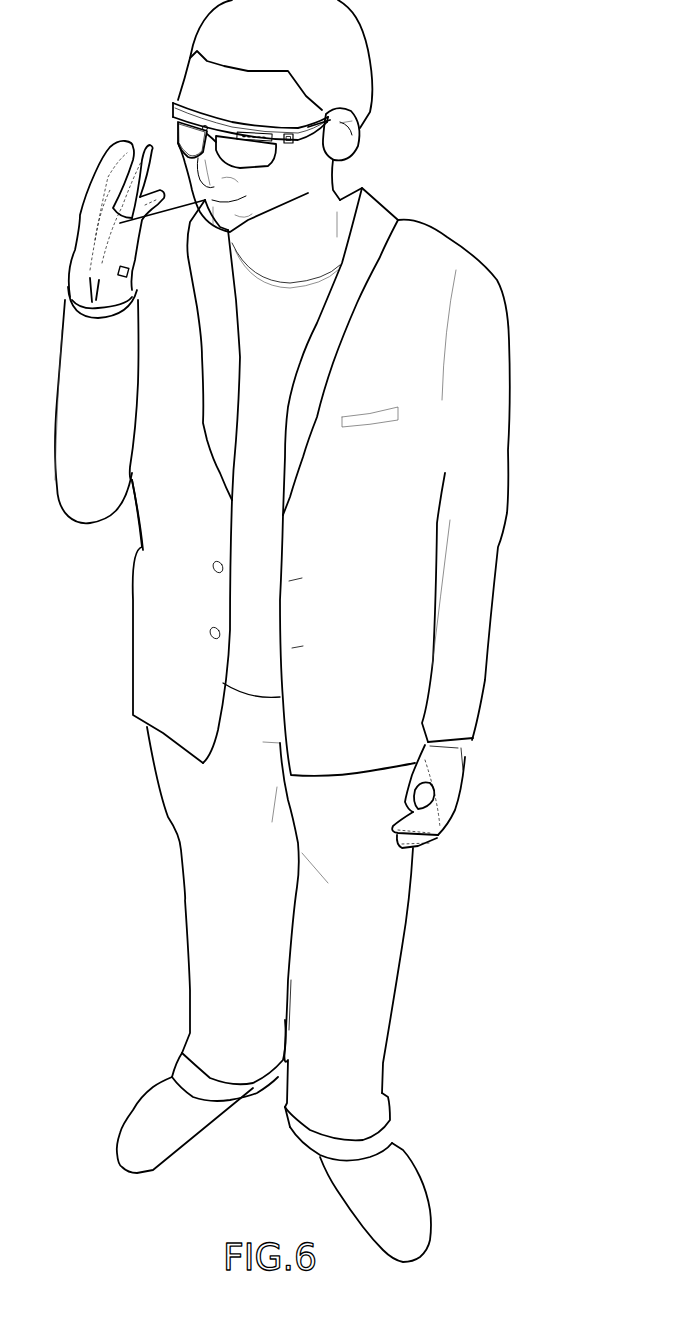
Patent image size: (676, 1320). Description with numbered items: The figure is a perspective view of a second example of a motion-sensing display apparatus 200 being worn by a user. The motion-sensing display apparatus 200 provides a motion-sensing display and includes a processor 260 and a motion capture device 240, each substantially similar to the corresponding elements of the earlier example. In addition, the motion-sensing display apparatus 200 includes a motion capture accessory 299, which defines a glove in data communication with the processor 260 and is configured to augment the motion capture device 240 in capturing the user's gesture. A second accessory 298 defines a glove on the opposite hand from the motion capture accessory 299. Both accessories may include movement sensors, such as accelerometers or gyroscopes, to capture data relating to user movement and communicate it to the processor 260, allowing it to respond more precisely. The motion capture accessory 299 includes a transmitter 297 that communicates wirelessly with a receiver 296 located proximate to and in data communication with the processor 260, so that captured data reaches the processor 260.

The motion-sensing display apparatus 200 is at (322, 106).
The motion capture device 240 is at (187, 118).
The processor 260 is at (280, 121).
The receiver 296 is at (296, 144).
The transmitter 297 is at (129, 272).
The second accessory 298 is at (448, 789).
The motion capture accessory 299 is at (80, 228).